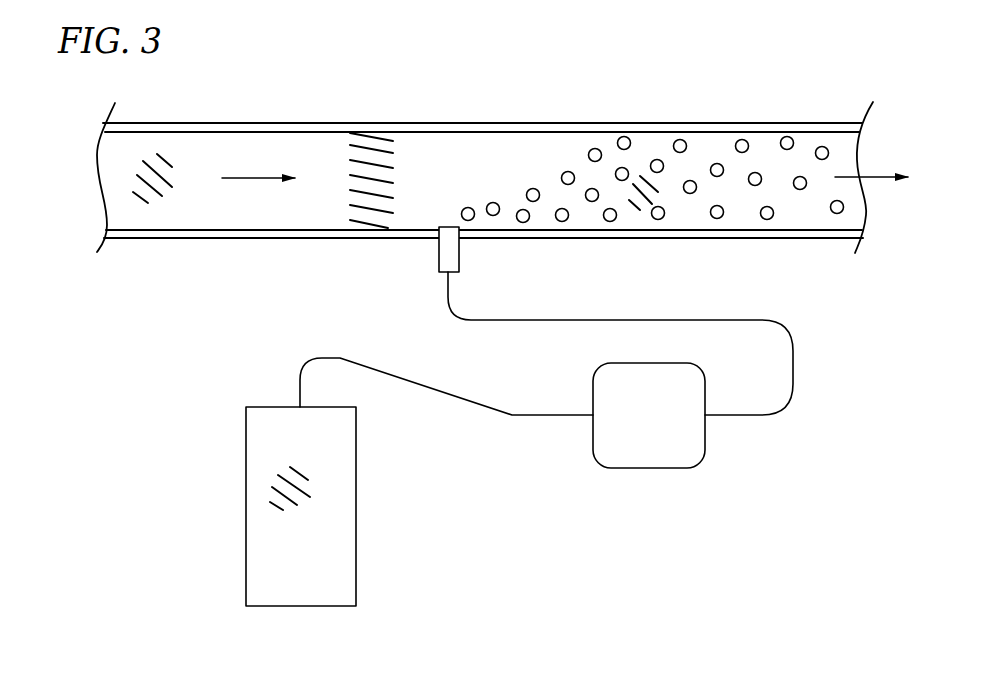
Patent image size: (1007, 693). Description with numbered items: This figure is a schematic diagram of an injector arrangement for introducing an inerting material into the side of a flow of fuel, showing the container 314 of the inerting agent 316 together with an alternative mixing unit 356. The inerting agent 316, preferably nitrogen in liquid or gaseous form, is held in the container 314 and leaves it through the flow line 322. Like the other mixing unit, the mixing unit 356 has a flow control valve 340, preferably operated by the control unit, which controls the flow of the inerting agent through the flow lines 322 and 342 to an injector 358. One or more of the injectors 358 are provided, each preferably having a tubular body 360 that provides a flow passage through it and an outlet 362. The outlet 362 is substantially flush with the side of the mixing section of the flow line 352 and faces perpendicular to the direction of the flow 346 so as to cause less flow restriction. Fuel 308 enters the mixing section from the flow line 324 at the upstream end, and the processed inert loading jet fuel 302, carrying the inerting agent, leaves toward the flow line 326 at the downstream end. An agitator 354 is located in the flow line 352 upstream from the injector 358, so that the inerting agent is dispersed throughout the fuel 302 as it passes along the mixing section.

The inert loading jet fuel 302 is at (641, 173).
The fuel 308 is at (165, 163).
The container 314 is at (356, 483).
The inerting agent 316 is at (282, 482).
The flow line 322 is at (447, 392).
The flow line 324 is at (103, 150).
The flow line 326 is at (843, 140).
The flow control valve 340 is at (672, 426).
The flow line 342 is at (570, 318).
The flow 346 is at (260, 178).
The flow line 352 is at (535, 125).
The agitator 354 is at (373, 142).
The mixing unit 356 is at (418, 322).
The injector 358 is at (450, 243).
The tubular body 360 is at (459, 250).
The outlet 362 is at (457, 227).